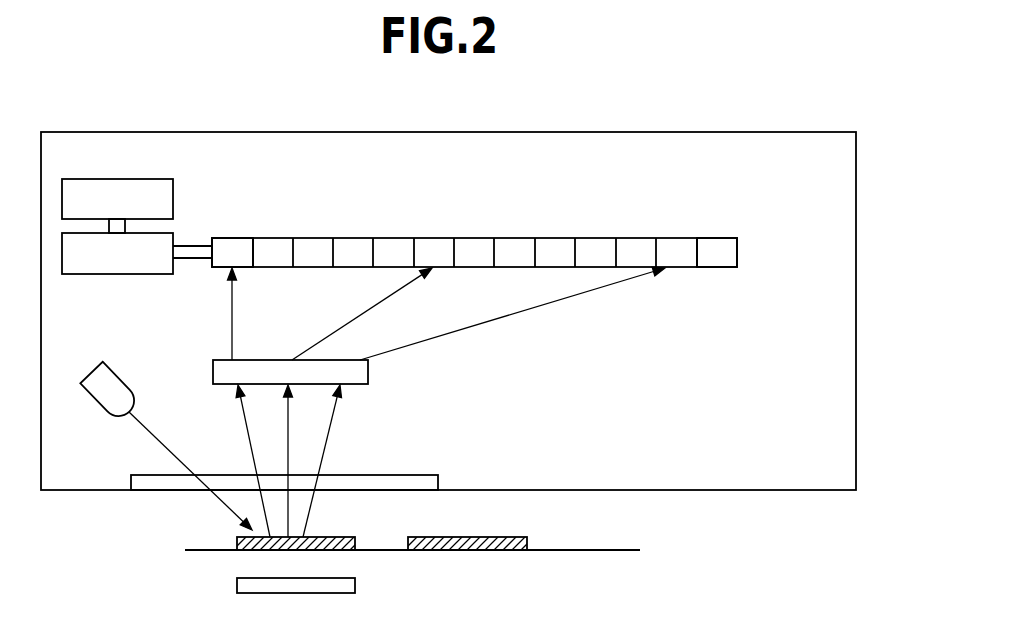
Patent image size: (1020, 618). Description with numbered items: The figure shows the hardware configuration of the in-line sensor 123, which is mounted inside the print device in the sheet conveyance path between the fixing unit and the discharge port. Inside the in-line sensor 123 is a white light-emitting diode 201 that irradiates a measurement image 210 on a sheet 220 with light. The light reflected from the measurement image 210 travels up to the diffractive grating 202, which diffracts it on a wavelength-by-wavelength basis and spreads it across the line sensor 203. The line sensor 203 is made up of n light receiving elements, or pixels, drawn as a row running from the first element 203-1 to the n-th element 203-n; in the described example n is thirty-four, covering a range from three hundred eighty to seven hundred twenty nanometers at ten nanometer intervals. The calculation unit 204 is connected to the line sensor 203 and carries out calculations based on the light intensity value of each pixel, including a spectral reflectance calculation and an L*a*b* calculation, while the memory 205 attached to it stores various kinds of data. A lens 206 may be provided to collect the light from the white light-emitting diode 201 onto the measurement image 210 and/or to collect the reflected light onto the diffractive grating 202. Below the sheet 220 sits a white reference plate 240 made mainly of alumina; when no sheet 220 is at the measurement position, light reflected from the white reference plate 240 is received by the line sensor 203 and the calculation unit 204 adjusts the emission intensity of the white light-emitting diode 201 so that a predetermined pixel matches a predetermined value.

The in-line sensor 123 is at (706, 132).
The white light-emitting diode 201 is at (150, 354).
The diffractive grating 202 is at (370, 370).
The line sensor 203 is at (736, 180).
The first light receiving element 203-1 is at (232, 238).
The n-th light receiving element 203-n is at (738, 250).
The calculation unit 204 is at (104, 274).
The memory 205 is at (98, 179).
The lens 206 is at (398, 475).
The measurement image 210 is at (237, 543).
The sheet 220 is at (568, 550).
The white reference plate 240 is at (357, 583).